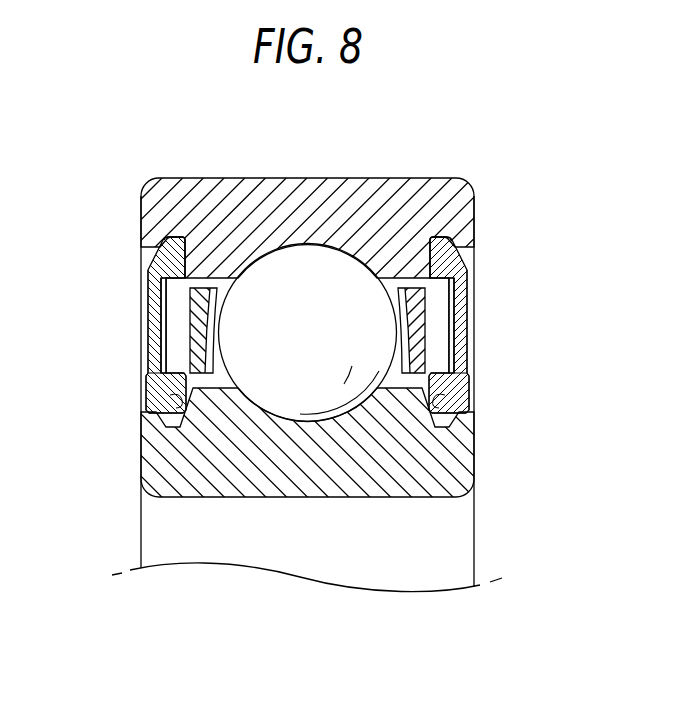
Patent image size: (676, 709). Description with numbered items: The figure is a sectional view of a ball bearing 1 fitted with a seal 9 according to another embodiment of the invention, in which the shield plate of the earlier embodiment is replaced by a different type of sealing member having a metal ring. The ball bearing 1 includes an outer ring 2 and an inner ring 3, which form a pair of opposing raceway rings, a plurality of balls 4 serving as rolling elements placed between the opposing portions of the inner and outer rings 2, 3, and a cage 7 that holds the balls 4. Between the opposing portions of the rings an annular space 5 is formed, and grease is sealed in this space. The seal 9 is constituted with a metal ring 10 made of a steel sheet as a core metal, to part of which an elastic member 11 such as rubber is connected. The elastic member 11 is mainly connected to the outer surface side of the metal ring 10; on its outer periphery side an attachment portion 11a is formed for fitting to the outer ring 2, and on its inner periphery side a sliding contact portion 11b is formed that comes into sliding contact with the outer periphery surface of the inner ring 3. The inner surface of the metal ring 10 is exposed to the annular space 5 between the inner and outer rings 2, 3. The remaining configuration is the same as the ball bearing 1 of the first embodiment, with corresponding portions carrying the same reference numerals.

The ball bearing 1 is at (118, 216).
The outer ring 2 is at (243, 184).
The inner ring 3 is at (150, 466).
The ball 4 is at (308, 270).
The annular space 5 is at (432, 338).
The cage 7 is at (196, 343).
The seal 9 is at (136, 317).
The metal ring 10 is at (163, 364).
The elastic member 11 is at (150, 281).
The attachment portion 11a is at (175, 237).
The sliding contact portion 11b is at (158, 420).